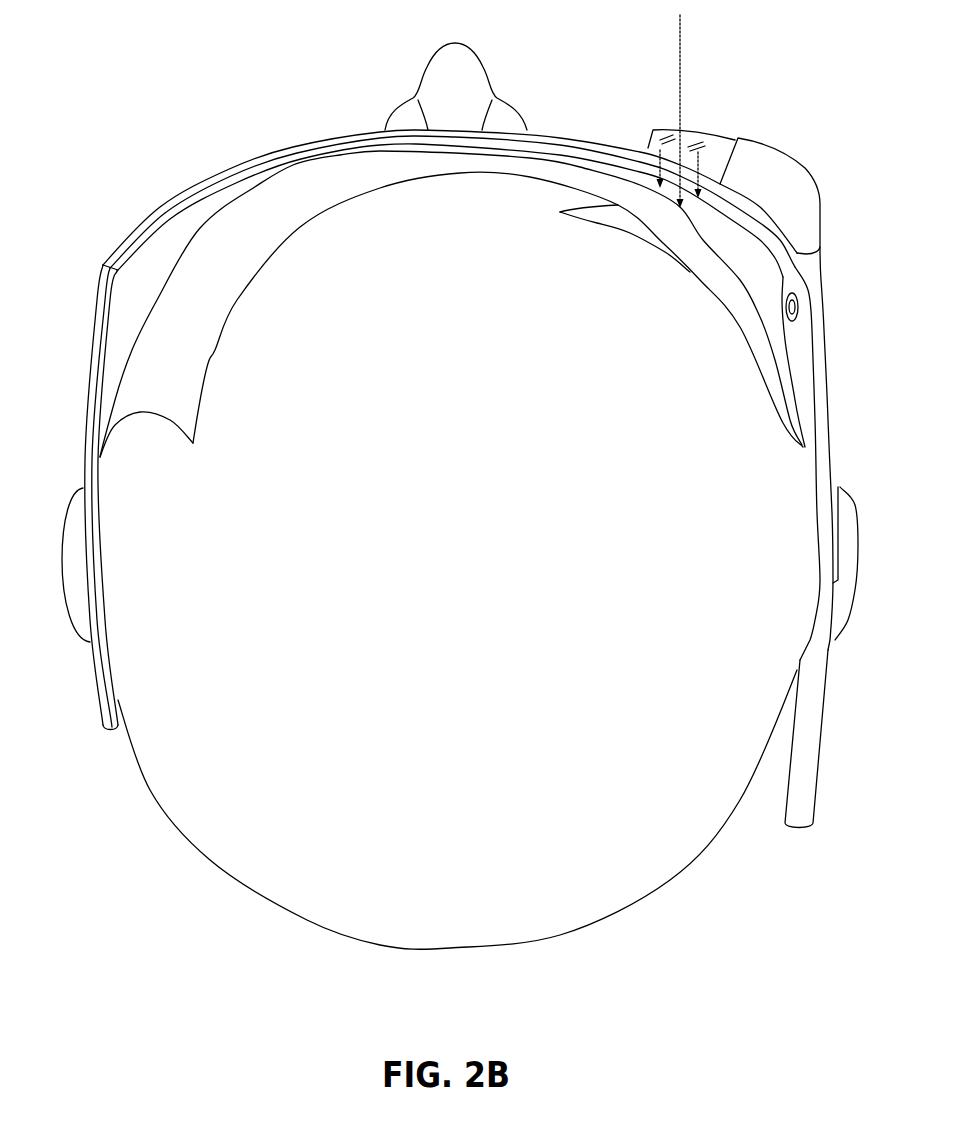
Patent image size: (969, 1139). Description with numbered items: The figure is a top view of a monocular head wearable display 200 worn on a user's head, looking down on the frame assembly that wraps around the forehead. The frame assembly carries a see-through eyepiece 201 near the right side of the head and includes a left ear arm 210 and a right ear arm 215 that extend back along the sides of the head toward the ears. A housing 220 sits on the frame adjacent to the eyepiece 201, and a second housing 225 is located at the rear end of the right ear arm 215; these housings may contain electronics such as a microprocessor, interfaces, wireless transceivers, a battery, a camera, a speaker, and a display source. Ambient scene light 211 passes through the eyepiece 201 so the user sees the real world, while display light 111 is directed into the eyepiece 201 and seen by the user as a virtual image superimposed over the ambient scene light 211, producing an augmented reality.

The head wearable display 200 is at (172, 105).
The eyepiece 201 is at (707, 137).
The display light 111 is at (658, 155).
The ambient scene light 211 is at (680, 62).
The housing 220 is at (785, 203).
The left ear arm 210 is at (97, 362).
The right ear arm 215 is at (822, 423).
The housing 225 is at (813, 738).